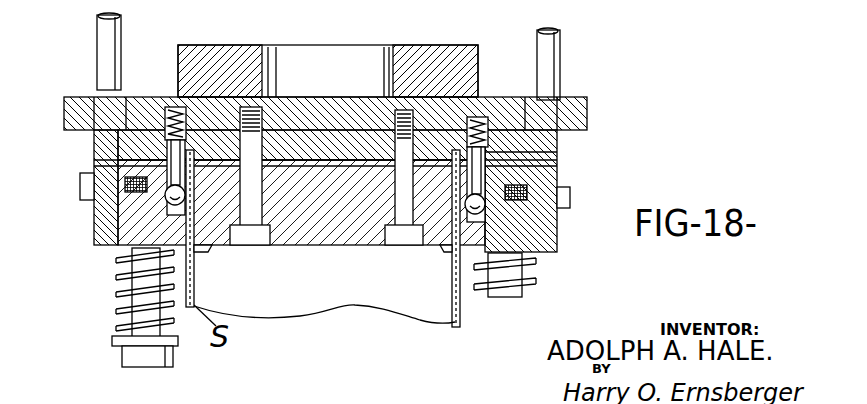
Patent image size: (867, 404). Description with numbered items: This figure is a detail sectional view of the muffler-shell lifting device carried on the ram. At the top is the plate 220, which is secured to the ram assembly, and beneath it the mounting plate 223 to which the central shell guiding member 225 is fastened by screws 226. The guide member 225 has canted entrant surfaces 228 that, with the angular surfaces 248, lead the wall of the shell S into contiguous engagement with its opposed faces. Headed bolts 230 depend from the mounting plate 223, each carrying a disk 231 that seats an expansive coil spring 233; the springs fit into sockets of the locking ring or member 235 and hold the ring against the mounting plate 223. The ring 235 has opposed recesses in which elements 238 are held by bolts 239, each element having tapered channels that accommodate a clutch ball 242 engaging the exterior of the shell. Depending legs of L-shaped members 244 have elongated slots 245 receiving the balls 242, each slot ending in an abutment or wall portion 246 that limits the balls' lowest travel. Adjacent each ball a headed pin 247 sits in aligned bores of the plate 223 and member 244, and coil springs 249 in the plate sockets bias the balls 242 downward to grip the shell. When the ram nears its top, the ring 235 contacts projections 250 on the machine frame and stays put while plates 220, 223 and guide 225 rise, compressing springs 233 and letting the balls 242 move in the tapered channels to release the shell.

The plate 220 is at (478, 48).
The mounting plate 223 is at (585, 108).
The central shell guiding member 225 is at (320, 233).
The screws 226 is at (400, 176).
The entrant surfaces 228 is at (200, 245).
The headed members or bolts 230 is at (120, 356).
The disk 231 is at (112, 338).
The expansive coil springs 233 is at (117, 293).
The locking ring or member 235 is at (560, 157).
The elements 238 is at (94, 140).
The bolts 239 is at (82, 196).
The ball or sphere 242 is at (175, 185).
The L-shaped members 244 is at (196, 158).
The elongated openings or slots 245 is at (125, 178).
The abutment or wall portion 246 is at (180, 222).
The headed pin 247 is at (165, 160).
The angular surfaces 248 is at (188, 212).
The expansive coil springs 249 is at (176, 108).
The projections 250 is at (122, 25).